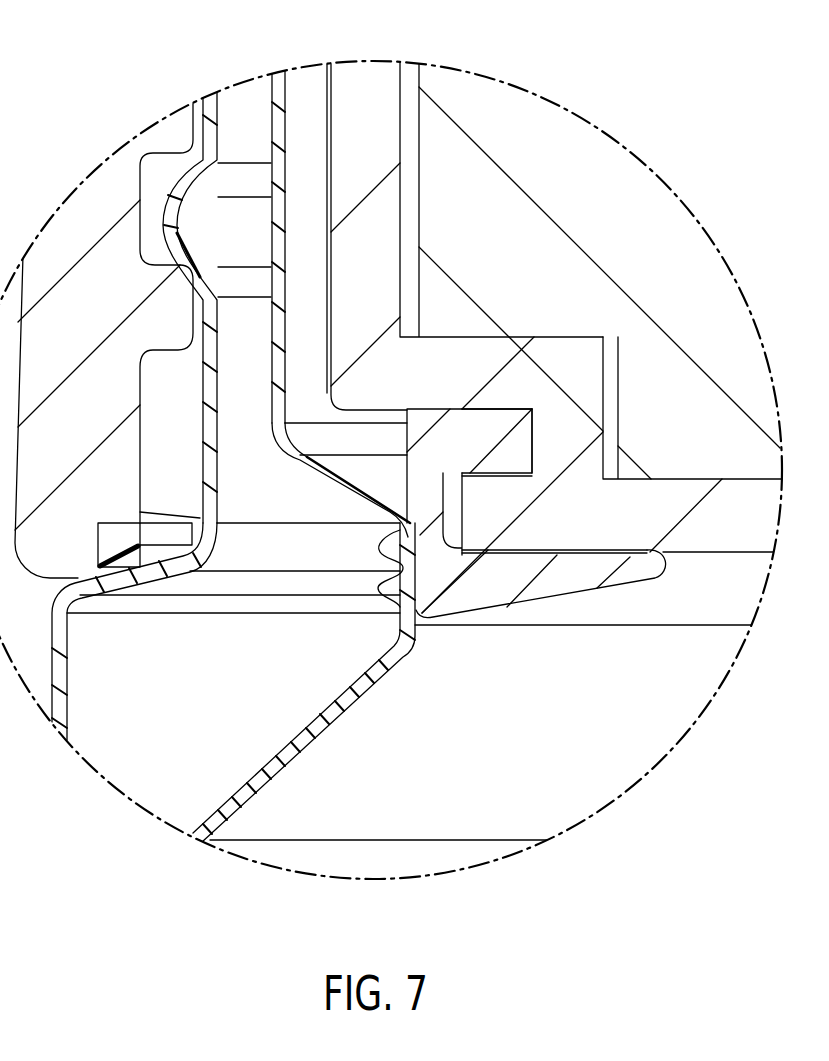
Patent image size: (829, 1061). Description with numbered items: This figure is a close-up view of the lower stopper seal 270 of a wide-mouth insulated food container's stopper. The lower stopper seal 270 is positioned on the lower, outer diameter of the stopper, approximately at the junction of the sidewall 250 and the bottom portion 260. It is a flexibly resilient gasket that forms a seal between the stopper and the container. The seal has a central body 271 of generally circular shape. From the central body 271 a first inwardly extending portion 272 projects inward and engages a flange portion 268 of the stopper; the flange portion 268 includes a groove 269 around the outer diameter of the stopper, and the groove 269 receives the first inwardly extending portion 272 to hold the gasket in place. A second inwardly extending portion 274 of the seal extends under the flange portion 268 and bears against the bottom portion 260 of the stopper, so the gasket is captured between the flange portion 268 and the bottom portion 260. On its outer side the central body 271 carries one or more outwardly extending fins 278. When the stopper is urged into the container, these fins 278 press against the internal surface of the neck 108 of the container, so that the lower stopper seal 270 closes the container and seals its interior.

The sidewall 250 is at (306, 91).
The flange portion 268 is at (430, 409).
The first inwardly extending portion 272 is at (497, 420).
The groove 269 is at (534, 445).
The lower stopper seal 270 is at (433, 452).
The central body 271 is at (427, 530).
The second inwardly extending portion 274 is at (578, 568).
The bottom portion 260 is at (705, 553).
The outwardly extending fins 278 is at (383, 552).
The neck 108 is at (414, 628).